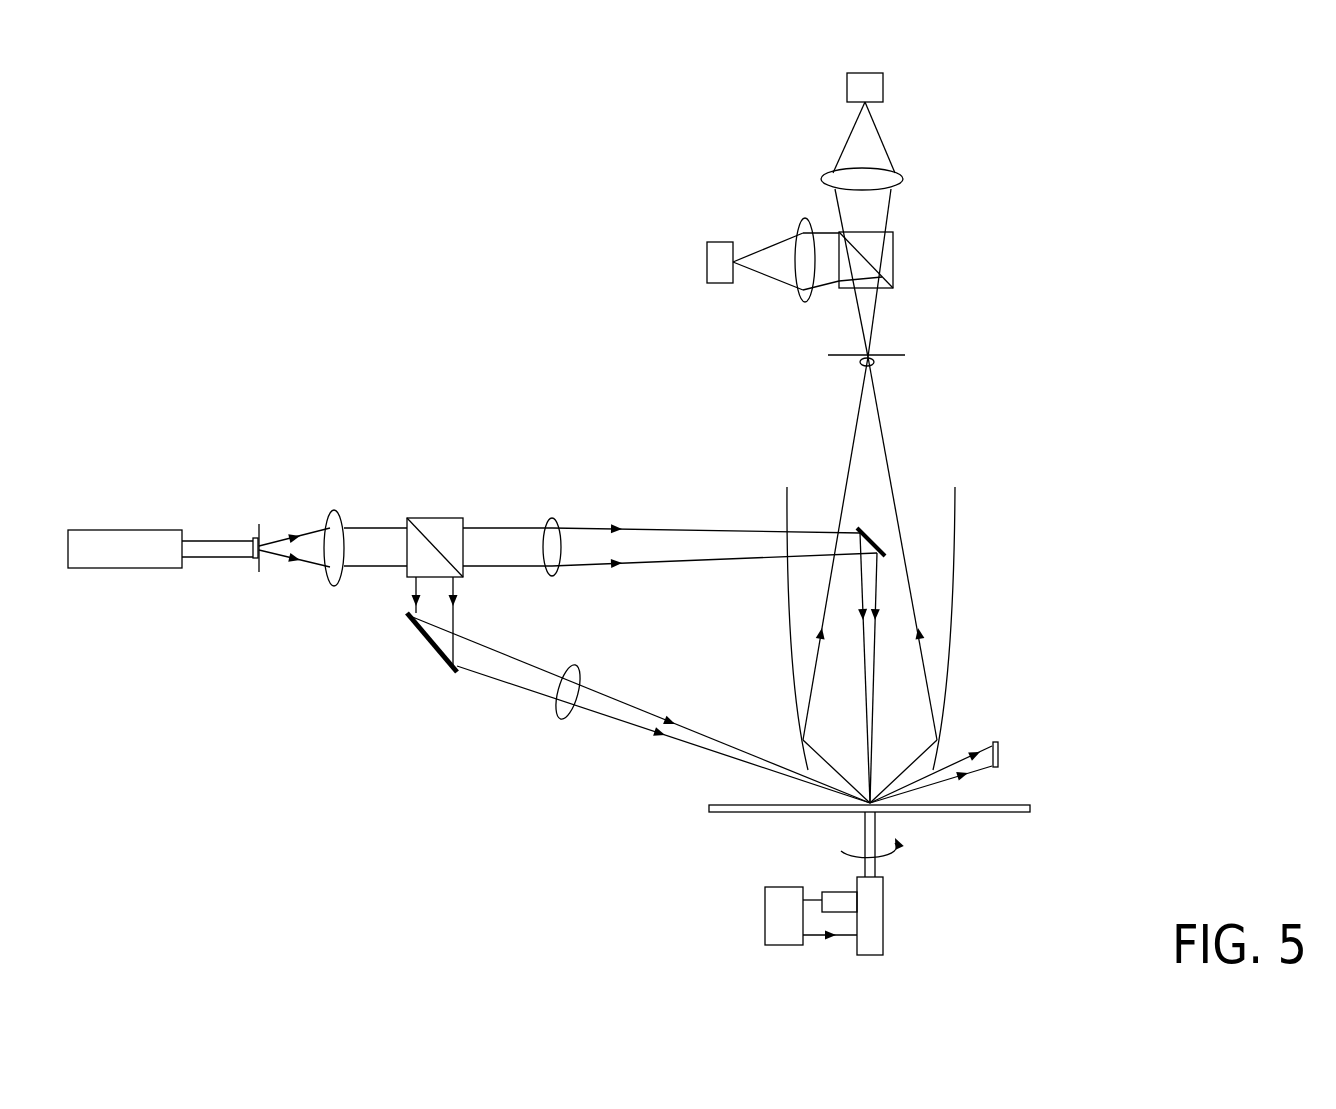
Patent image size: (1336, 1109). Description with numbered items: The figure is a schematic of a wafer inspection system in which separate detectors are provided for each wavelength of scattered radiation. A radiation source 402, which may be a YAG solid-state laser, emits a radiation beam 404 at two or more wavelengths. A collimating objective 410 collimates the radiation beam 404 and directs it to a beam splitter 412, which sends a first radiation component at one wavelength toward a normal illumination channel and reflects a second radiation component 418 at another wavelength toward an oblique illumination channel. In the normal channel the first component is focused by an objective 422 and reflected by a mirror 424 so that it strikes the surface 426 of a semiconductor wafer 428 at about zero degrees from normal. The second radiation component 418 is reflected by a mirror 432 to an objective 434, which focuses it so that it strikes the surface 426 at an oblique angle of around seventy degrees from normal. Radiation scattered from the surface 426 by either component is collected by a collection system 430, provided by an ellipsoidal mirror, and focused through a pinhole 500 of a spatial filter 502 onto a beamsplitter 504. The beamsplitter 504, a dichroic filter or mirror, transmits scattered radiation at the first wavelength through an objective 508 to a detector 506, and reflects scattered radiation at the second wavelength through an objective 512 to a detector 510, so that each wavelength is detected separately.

The radiation source 402 is at (130, 569).
The radiation beam 404 is at (217, 552).
The collimating objective 410 is at (343, 517).
The beam splitter 412 is at (430, 517).
The second radiation component 418 is at (430, 612).
The objective 422 is at (560, 518).
The mirror 424 is at (872, 530).
The surface 426 is at (1010, 807).
The semiconductor wafer 428 is at (1030, 810).
The collection system 430 is at (792, 640).
The mirror 432 is at (427, 652).
The objective 434 is at (578, 678).
The pinhole 500 is at (876, 347).
The spatial filter 502 is at (918, 355).
The beamsplitter 504 is at (895, 243).
The detector 506 is at (885, 77).
The objective 508 is at (903, 178).
The detector 510 is at (705, 257).
The objective 512 is at (800, 293).